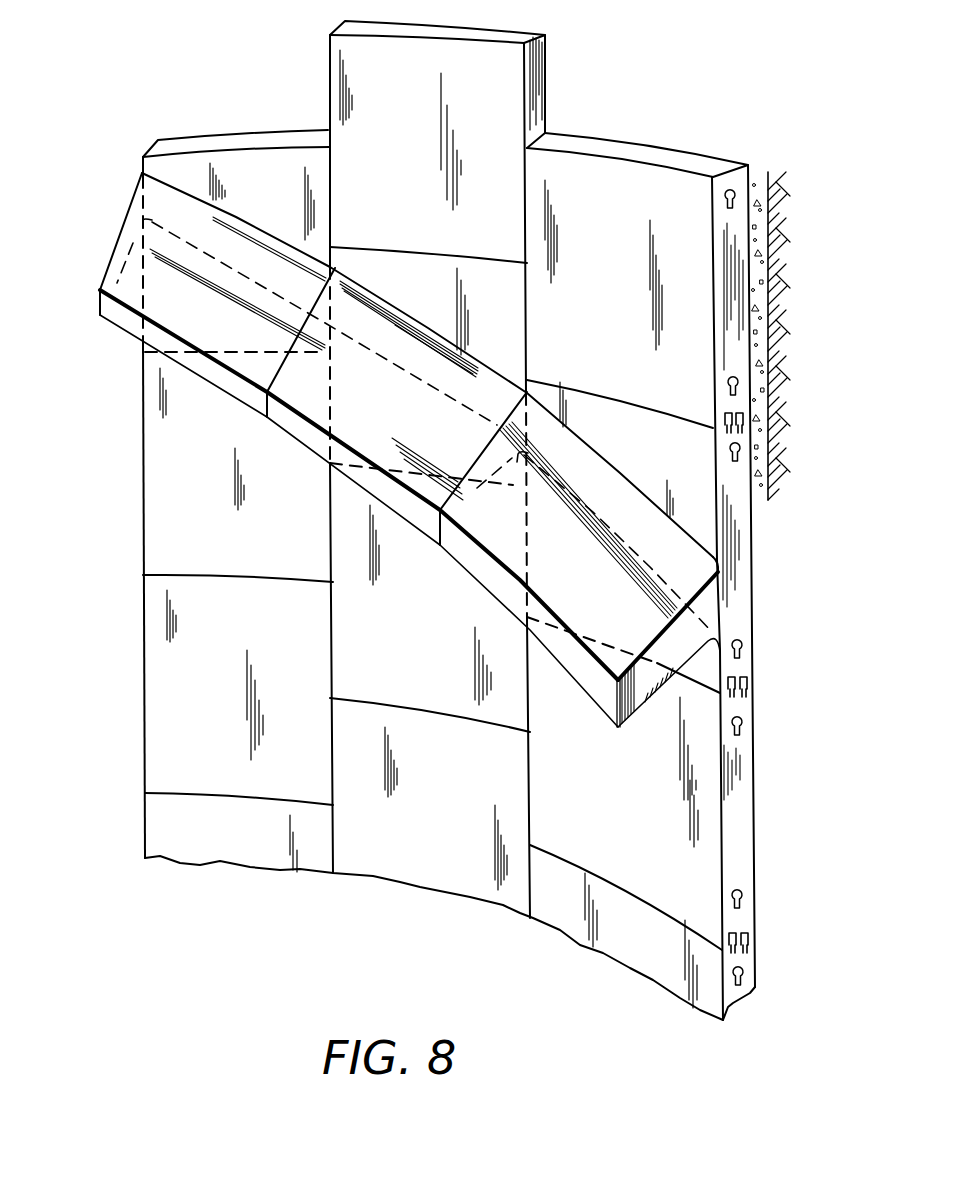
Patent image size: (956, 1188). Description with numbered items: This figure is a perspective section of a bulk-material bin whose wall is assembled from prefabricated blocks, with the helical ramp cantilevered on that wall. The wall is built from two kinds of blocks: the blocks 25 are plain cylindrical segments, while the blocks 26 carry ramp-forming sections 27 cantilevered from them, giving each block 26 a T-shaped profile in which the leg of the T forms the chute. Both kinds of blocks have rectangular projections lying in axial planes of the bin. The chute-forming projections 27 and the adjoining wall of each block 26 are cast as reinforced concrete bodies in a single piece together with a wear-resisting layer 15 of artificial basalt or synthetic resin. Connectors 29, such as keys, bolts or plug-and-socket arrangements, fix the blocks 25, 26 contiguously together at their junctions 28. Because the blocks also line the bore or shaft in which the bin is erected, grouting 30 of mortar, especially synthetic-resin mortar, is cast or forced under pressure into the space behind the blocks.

The wear-resisting layer 15 is at (700, 592).
The blocks 25 is at (407, 196).
The blocks 26 is at (283, 201).
The ramp-forming sections 27 is at (234, 336).
The junctions 28 is at (751, 531).
The connectors 29 is at (118, 243).
The grouting 30 is at (769, 283).